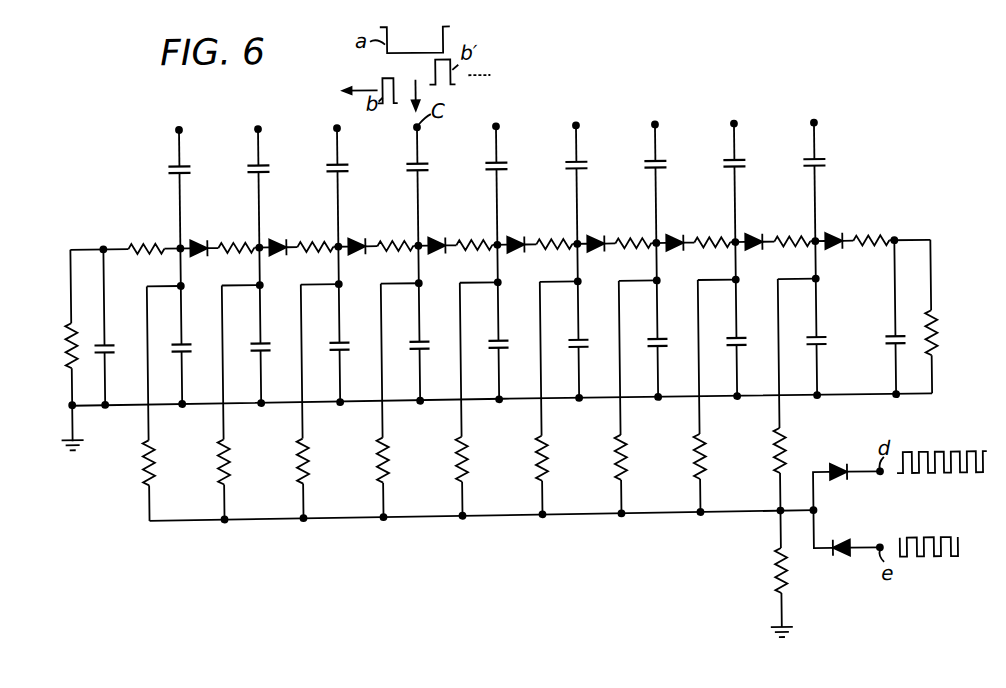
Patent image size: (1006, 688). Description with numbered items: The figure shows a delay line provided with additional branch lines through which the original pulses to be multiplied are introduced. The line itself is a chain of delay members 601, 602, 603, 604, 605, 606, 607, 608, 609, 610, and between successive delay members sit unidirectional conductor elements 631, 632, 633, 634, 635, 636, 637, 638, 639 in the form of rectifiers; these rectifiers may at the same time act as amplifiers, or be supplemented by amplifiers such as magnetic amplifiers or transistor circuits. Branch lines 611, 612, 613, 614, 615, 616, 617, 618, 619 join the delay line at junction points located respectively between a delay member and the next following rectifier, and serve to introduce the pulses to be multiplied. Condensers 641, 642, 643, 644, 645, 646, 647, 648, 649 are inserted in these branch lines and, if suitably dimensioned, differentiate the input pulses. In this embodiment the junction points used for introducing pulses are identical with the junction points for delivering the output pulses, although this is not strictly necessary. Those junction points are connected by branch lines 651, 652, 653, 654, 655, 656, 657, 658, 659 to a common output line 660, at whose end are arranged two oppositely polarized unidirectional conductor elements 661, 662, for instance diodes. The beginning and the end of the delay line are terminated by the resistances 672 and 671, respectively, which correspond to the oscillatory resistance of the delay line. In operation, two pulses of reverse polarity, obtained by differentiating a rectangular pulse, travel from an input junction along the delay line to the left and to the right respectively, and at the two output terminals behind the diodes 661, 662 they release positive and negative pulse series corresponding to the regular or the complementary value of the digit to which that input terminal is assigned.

The delay member 601 is at (162, 258).
The delay member 602 is at (237, 258).
The delay member 603 is at (316, 258).
The delay member 604 is at (396, 258).
The delay member 605 is at (475, 258).
The delay member 606 is at (553, 258).
The delay member 607 is at (631, 258).
The delay member 608 is at (710, 258).
The delay member 609 is at (789, 258).
The delay member 610 is at (870, 258).
The branch line 611 is at (179, 191).
The branch line 612 is at (258, 191).
The branch line 613 is at (337, 191).
The branch line 614 is at (417, 191).
The branch line 615 is at (496, 191).
The branch line 616 is at (576, 191).
The branch line 617 is at (655, 191).
The branch line 618 is at (734, 191).
The branch line 619 is at (813, 191).
The unidirectional conductor element 631 is at (199, 241).
The unidirectional conductor element 632 is at (278, 241).
The unidirectional conductor element 633 is at (357, 241).
The unidirectional conductor element 634 is at (437, 241).
The unidirectional conductor element 635 is at (516, 241).
The unidirectional conductor element 636 is at (596, 241).
The unidirectional conductor element 637 is at (675, 241).
The unidirectional conductor element 638 is at (754, 241).
The unidirectional conductor element 639 is at (834, 241).
The condenser 641 is at (183, 166).
The condenser 642 is at (262, 166).
The condenser 643 is at (341, 166).
The condenser 644 is at (421, 166).
The condenser 645 is at (500, 166).
The condenser 646 is at (580, 166).
The condenser 647 is at (659, 166).
The condenser 648 is at (738, 166).
The condenser 649 is at (818, 166).
The branch line 651 is at (145, 355).
The branch line 652 is at (220, 355).
The branch line 653 is at (299, 355).
The branch line 654 is at (379, 355).
The branch line 655 is at (458, 355).
The branch line 656 is at (538, 355).
The branch line 657 is at (617, 355).
The branch line 658 is at (696, 355).
The branch line 659 is at (776, 355).
The common output line 660 is at (424, 519).
The unidirectional conductor element 661 is at (831, 471).
The unidirectional conductor element 662 is at (834, 568).
The resistance 671 is at (63, 344).
The resistance 672 is at (935, 339).